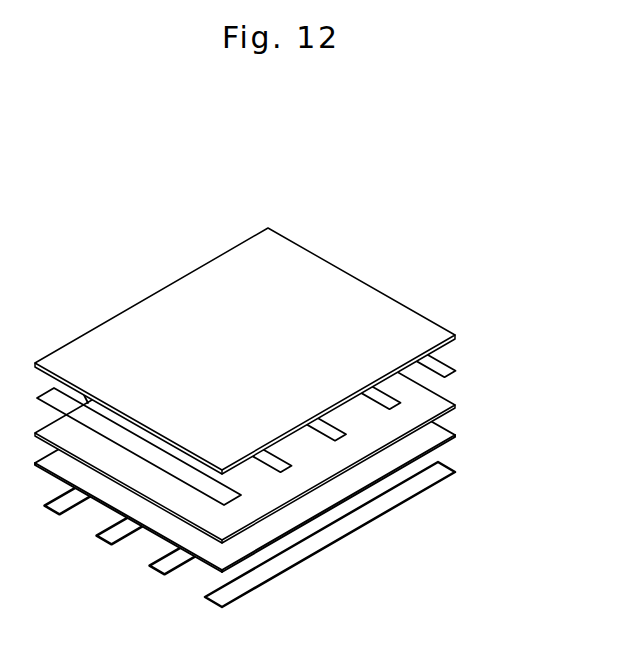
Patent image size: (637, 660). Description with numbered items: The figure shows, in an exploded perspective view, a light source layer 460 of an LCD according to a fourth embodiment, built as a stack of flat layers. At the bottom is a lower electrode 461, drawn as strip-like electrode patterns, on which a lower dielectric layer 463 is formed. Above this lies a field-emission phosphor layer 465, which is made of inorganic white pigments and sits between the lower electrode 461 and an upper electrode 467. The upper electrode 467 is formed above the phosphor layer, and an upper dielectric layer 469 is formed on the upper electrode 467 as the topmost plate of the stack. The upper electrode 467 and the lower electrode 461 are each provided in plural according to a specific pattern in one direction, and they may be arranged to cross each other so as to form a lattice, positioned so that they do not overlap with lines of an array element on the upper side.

The light source layer 460 is at (110, 260).
The lower electrode 461 is at (450, 478).
The lower dielectric layer 463 is at (450, 445).
The field-emission phosphor layer 465 is at (450, 412).
The upper electrode 467 is at (450, 378).
The upper dielectric layer 469 is at (450, 345).